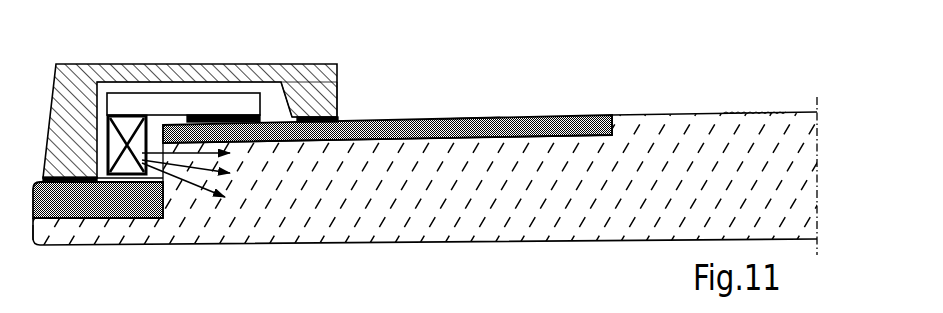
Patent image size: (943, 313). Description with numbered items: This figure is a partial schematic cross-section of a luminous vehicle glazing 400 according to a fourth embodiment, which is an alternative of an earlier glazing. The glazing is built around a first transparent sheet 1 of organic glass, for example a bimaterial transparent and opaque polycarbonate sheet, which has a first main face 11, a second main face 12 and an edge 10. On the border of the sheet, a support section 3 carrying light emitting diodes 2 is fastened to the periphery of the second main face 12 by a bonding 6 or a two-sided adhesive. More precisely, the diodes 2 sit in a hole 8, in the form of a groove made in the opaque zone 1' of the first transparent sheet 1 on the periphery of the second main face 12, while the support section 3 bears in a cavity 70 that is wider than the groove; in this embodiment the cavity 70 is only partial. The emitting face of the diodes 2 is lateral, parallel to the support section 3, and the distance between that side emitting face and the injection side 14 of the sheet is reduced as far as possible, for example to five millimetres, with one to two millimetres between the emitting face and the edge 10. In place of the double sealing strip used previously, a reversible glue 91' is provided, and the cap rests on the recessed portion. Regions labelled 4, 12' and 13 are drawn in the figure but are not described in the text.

The first transparent sheet 1 is at (471, 132).
The opaque zone 1' is at (387, 171).
The light emitting diodes 2 is at (125, 121).
The support section 3 is at (205, 100).
The housing body 4 is at (110, 70).
The bonding 6 is at (247, 113).
The hole 8 is at (100, 180).
The edge 10 is at (33, 246).
The first main face 11 is at (270, 244).
The second main face 12 is at (714, 83).
The roughened surface portion 12' is at (755, 82).
The layer surface 13 is at (470, 118).
The injection side 14 is at (143, 193).
The cavity 70 is at (160, 90).
The reversible glue 91' is at (329, 79).
The luminous vehicle glazing 400 is at (531, 64).